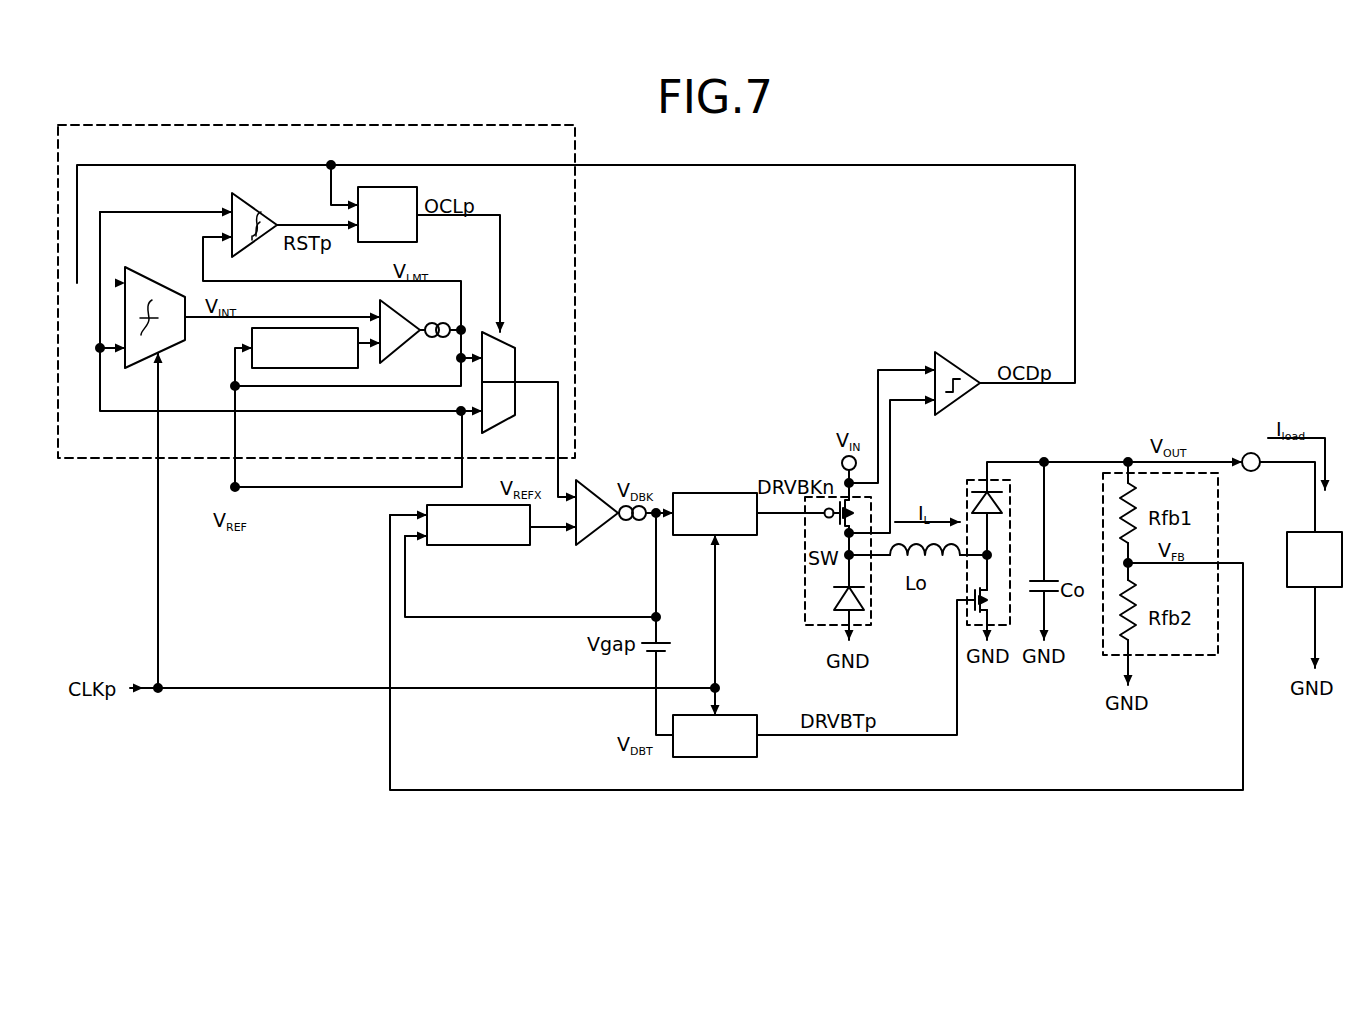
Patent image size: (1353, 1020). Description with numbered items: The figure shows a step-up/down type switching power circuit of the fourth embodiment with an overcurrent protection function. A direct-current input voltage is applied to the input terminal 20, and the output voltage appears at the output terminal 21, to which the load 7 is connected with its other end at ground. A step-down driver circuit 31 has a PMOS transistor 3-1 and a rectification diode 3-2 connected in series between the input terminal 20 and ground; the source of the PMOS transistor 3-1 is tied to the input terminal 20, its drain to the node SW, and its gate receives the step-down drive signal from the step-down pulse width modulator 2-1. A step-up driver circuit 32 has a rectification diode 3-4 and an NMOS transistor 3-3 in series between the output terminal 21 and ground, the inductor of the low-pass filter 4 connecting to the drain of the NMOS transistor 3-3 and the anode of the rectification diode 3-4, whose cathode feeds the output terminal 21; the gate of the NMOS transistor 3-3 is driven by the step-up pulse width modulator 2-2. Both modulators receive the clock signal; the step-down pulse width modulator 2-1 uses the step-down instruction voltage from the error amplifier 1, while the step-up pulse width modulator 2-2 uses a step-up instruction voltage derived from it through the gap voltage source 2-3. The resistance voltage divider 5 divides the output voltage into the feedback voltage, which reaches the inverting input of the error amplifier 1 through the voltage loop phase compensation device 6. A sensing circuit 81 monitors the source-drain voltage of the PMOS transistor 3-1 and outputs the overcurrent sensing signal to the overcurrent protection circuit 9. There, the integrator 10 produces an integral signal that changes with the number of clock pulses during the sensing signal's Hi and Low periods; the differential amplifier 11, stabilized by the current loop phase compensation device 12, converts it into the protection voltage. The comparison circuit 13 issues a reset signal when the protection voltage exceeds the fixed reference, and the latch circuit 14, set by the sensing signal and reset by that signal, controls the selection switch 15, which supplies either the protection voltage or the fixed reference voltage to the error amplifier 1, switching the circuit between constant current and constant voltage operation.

The overcurrent protection circuit 9 is at (578, 247).
The integrator 10 is at (150, 286).
The differential amplifier 11 is at (403, 320).
The current loop phase compensation device 12 is at (318, 370).
The comparison circuit 13 is at (254, 216).
The latch circuit 14 is at (398, 185).
The selection switch 15 is at (510, 347).
The error amplifier 1 is at (600, 535).
The voltage loop phase compensation device 6 is at (495, 546).
The step-down pulse width modulator 2-1 is at (715, 492).
The step-up pulse width modulator 2-2 is at (738, 714).
The gap voltage source 2-3 is at (652, 653).
The input terminal 20 is at (841, 464).
The PMOS transistor 3-1 is at (825, 520).
The rectification diode 3-2 is at (830, 600).
The step-down driver circuit 31 is at (805, 578).
The NMOS transistor 3-3 is at (957, 607).
The rectification diode 3-4 is at (972, 483).
The step-up driver circuit 32 is at (1002, 480).
The sensing circuit 81 is at (958, 365).
The low-pass filter 4 is at (1054, 586).
The resistance voltage divider 5 is at (1104, 660).
The output terminal 21 is at (1248, 452).
The load 7 is at (1328, 531).